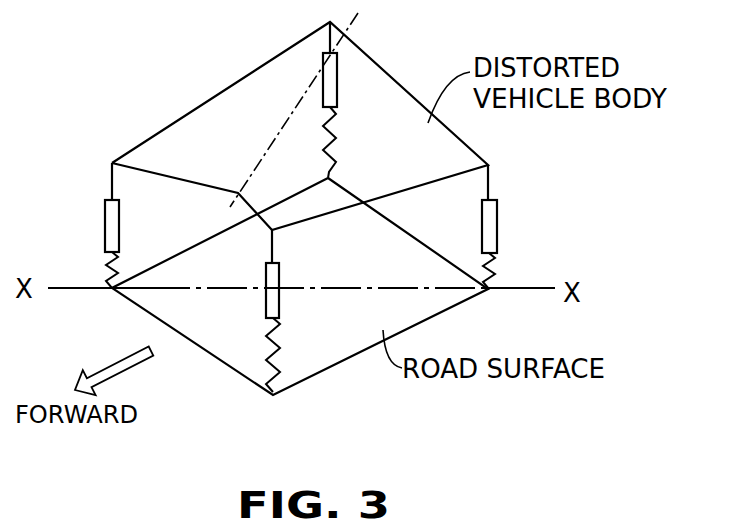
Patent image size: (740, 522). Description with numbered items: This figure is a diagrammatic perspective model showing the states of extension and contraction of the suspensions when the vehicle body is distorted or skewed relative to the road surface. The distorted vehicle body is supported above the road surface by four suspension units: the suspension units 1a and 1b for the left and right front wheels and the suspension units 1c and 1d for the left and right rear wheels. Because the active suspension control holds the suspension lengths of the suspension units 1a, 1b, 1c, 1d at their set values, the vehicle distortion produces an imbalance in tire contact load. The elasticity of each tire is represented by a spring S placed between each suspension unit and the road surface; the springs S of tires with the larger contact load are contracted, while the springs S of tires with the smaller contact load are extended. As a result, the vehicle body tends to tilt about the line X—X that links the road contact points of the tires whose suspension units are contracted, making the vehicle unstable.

The suspension unit 1a is at (283, 272).
The suspension unit 1b is at (96, 219).
The suspension unit 1c is at (503, 219).
The suspension unit 1d is at (343, 86).
The spring S is at (104, 266).